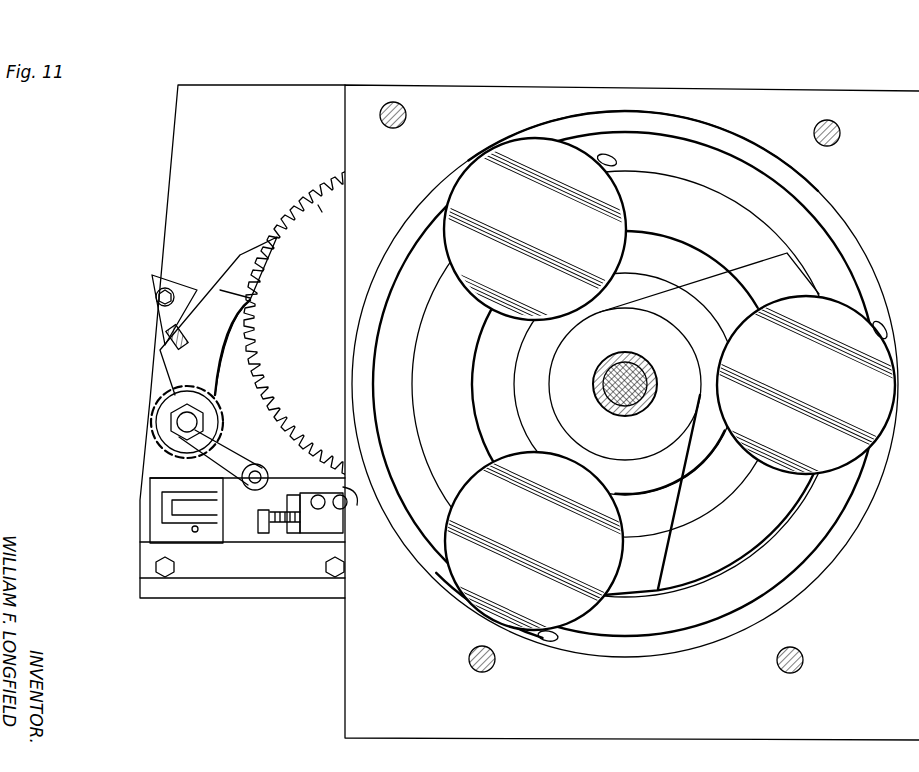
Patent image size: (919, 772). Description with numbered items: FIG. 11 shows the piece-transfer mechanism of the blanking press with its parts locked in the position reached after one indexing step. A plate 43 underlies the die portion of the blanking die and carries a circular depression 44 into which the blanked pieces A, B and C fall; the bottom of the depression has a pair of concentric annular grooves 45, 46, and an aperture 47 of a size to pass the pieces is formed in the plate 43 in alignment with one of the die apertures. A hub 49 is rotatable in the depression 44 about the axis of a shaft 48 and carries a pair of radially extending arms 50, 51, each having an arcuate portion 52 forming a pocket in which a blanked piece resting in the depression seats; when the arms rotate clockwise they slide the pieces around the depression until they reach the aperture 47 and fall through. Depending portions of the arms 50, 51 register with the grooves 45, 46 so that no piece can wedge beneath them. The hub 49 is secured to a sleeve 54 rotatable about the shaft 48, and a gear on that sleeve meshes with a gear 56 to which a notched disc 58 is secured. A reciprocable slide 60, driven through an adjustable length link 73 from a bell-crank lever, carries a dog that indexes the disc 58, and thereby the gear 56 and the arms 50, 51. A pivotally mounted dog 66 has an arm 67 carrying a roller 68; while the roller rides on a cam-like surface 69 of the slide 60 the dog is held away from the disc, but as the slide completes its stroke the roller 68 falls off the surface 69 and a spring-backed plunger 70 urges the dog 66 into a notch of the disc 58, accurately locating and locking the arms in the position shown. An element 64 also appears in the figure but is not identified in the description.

The plate 43 is at (458, 96).
The circular depression 44 is at (842, 232).
The annular groove 45 is at (662, 247).
The annular groove 46 is at (700, 158).
The aperture 47 is at (618, 160).
The shaft 48 is at (638, 366).
The hub 49 is at (560, 398).
The arm 50 is at (660, 553).
The arm 51 is at (750, 272).
The arcuate portion 52 is at (782, 310).
The sleeve 54 is at (618, 412).
The gear 56 is at (312, 230).
The disc 58 is at (320, 207).
The slide 60 is at (291, 484).
The back plate 64 is at (347, 180).
The dog 66 is at (240, 260).
The arm 67 is at (225, 455).
The roller 68 is at (262, 463).
The cam-like surface 69 is at (357, 506).
The plunger 70 is at (178, 335).
The adjustable length link 73 is at (150, 520).